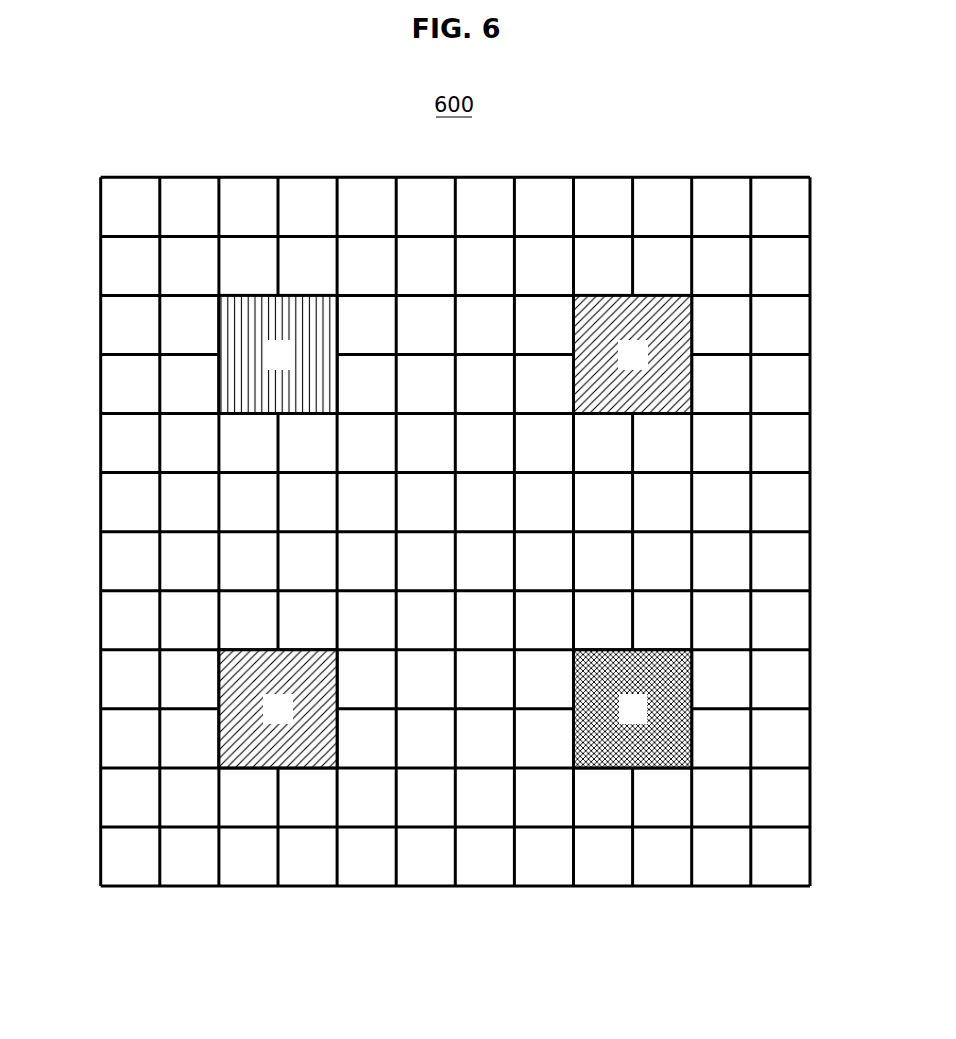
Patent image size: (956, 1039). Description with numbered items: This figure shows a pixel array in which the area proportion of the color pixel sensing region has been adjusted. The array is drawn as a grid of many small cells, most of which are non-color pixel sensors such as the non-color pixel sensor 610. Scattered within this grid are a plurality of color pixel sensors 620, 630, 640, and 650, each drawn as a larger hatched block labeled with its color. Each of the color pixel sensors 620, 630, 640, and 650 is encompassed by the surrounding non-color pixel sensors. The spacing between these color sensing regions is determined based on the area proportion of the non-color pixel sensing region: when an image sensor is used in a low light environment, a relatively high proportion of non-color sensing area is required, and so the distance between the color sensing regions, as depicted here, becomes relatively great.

The non-color pixel sensor 610 is at (121, 208).
The color pixel sensor 620 is at (232, 335).
The color pixel sensor 630 is at (683, 331).
The color pixel sensor 640 is at (232, 687).
The color pixel sensor 650 is at (683, 685).